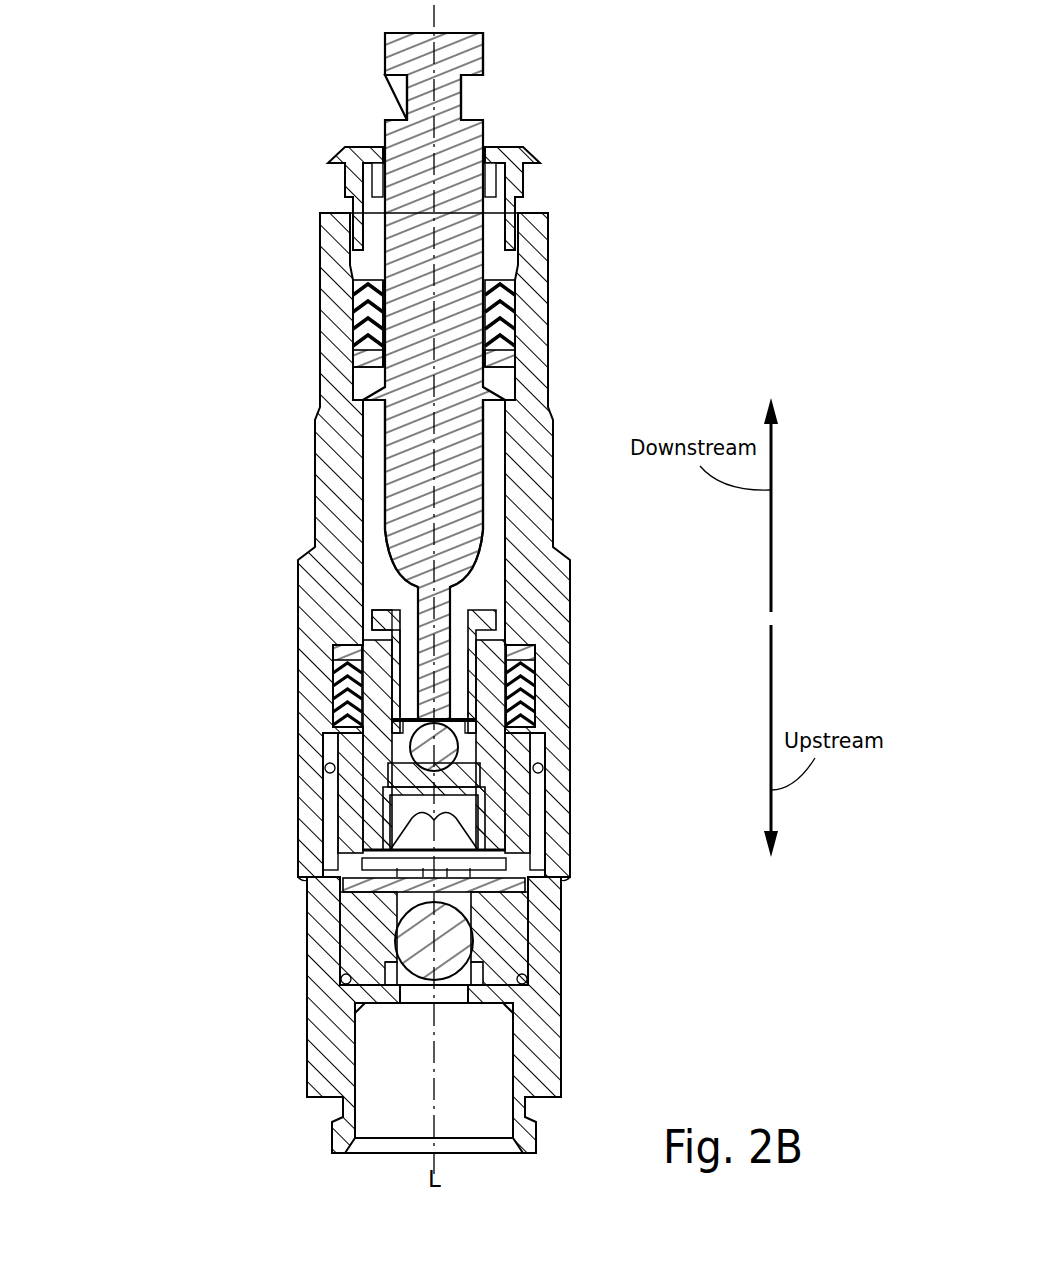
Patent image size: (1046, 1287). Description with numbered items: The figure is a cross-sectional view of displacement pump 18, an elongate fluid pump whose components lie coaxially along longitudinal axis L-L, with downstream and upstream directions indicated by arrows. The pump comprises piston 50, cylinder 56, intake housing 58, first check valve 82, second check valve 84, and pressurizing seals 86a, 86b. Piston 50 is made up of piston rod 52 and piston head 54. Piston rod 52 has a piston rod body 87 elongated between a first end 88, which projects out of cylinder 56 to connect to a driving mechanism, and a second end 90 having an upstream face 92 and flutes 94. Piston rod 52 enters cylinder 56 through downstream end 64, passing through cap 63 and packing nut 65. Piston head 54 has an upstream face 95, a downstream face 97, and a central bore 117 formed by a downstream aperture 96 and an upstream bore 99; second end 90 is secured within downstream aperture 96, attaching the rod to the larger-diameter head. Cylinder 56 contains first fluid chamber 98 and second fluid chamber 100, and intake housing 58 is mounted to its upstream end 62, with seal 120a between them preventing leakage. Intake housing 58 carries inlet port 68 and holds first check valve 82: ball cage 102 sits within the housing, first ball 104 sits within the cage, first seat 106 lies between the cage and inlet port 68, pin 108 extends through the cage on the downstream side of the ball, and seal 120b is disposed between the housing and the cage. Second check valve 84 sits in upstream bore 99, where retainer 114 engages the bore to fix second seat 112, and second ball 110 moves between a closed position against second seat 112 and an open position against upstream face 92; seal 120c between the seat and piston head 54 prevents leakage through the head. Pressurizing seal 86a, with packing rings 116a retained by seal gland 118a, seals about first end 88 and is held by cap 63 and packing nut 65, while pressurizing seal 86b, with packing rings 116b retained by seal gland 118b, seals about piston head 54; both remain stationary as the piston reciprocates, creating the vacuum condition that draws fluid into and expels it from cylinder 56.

The displacement pump 18 is at (183, 427).
The piston 50 is at (366, 495).
The piston rod 52 is at (520, 385).
The piston head 54 is at (482, 765).
The cylinder 56 is at (554, 505).
The intake housing 58 is at (557, 945).
The upstream end 62 is at (562, 845).
The cap 63 is at (527, 150).
The downstream end 64 is at (546, 235).
The packing nut 65 is at (518, 178).
The inlet port 68 is at (470, 1105).
The first check valve 82 is at (333, 937).
The second check valve 84 is at (400, 772).
The pressurizing seal 86a is at (350, 330).
The pressurizing seal 86b is at (537, 688).
The piston rod body 87 is at (398, 413).
The first end 88 is at (452, 88).
The second end 90 is at (455, 530).
The upstream face 92 is at (510, 742).
The flutes 94 is at (455, 596).
The upstream face 95 is at (380, 878).
The downstream aperture 96 is at (386, 750).
The downstream face 97 is at (386, 612).
The first fluid chamber 98 is at (524, 885).
The upstream bore 99 is at (506, 858).
The second fluid chamber 100 is at (492, 417).
The ball cage 102 is at (512, 950).
The first ball 104 is at (450, 955).
The first seat 106 is at (470, 968).
The pin 108 is at (528, 895).
The second ball 110 is at (396, 640).
The second seat 112 is at (383, 828).
The retainer 114 is at (416, 836).
The packing rings 116a is at (515, 354).
The packing rings 116b is at (333, 717).
The central bore 117 is at (330, 885).
The seal gland 118a is at (358, 360).
The seal gland 118b is at (345, 648).
The seal 120a is at (540, 770).
The seal 120b is at (335, 983).
The seal 120c is at (328, 773).